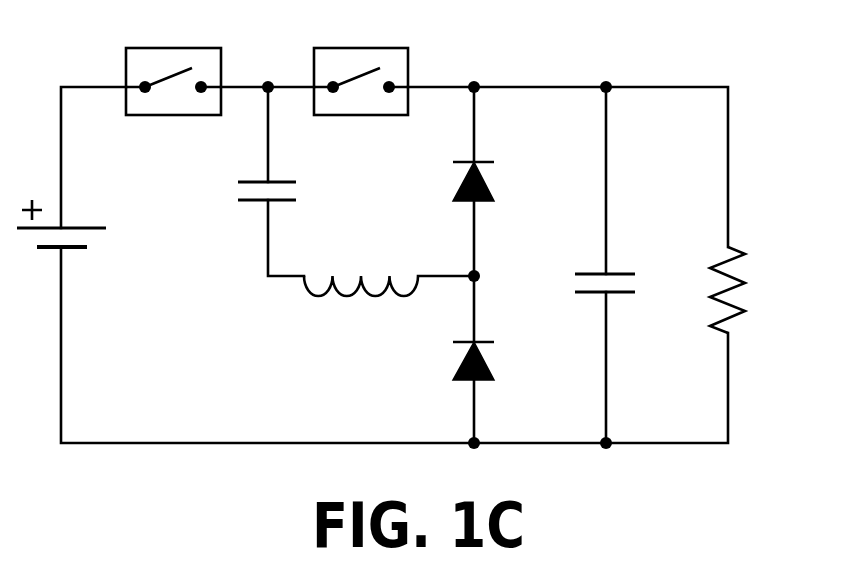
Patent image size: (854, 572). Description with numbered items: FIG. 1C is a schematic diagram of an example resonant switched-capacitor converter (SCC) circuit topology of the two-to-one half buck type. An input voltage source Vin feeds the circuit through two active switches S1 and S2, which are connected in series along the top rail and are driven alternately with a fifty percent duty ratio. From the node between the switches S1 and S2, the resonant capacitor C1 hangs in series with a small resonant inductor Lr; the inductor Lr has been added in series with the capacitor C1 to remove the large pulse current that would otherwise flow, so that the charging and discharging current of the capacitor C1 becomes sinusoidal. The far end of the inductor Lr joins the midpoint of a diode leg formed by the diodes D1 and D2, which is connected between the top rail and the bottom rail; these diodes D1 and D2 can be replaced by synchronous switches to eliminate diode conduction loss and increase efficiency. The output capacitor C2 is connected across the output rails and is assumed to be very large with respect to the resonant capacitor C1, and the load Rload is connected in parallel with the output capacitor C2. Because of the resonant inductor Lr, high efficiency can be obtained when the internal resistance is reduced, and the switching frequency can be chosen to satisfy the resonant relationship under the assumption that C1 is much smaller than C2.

The input voltage source Vin is at (68, 244).
The active switch S1 is at (173, 65).
The active switch S2 is at (361, 65).
The resonant capacitor C1 is at (255, 211).
The resonant inductor Lr is at (389, 302).
The diode D1 is at (453, 178).
The diode D2 is at (453, 357).
The output capacitor C2 is at (594, 304).
The load resistor Rload is at (761, 300).